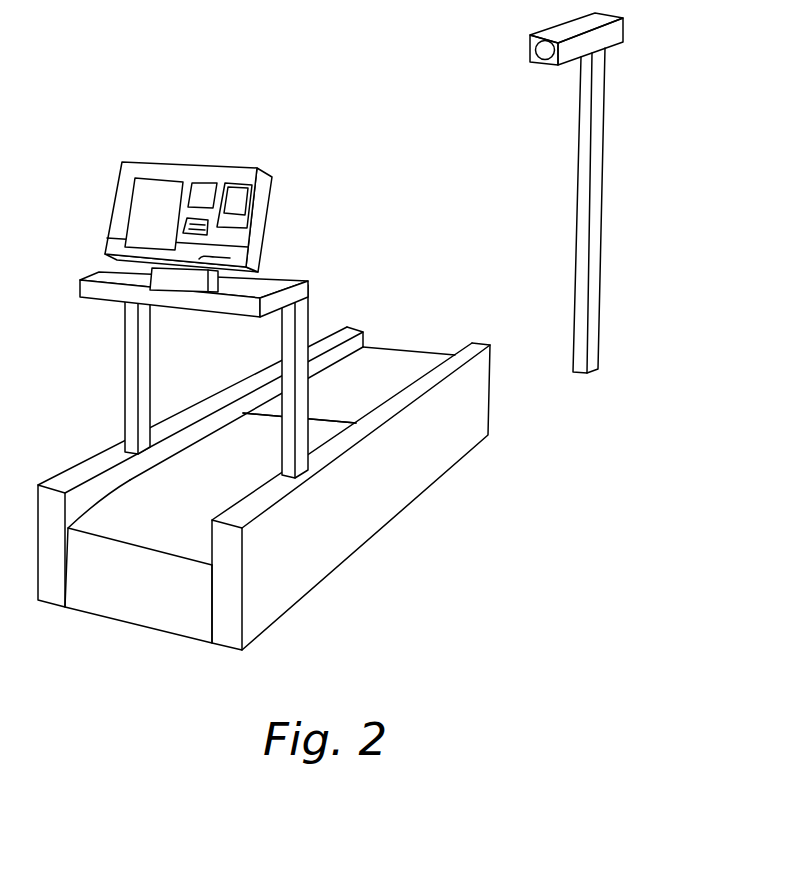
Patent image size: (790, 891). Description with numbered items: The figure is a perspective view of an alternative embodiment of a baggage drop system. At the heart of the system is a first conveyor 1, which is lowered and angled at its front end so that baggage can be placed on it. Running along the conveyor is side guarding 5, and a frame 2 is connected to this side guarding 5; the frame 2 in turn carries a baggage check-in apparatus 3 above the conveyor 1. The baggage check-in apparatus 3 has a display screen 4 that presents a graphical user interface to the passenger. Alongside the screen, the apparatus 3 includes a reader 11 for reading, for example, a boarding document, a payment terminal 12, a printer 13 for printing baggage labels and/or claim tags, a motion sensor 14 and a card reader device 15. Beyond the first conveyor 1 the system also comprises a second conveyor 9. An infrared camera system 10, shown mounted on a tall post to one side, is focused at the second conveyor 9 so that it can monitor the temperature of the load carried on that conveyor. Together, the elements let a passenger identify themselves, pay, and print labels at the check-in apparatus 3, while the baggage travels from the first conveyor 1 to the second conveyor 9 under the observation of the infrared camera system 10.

The conveyor 1 is at (155, 522).
The frame 2 is at (130, 398).
The baggage check-in apparatus 3 is at (190, 186).
The display screen 4 is at (153, 209).
The side guarding 5 is at (360, 433).
The second conveyor 9 is at (393, 367).
The infrared camera system 10 is at (597, 162).
The reader 11 is at (203, 198).
The payment terminal 12 is at (237, 197).
The printer 13 is at (206, 228).
The motion sensor 14 is at (187, 257).
The card reader device 15 is at (232, 260).